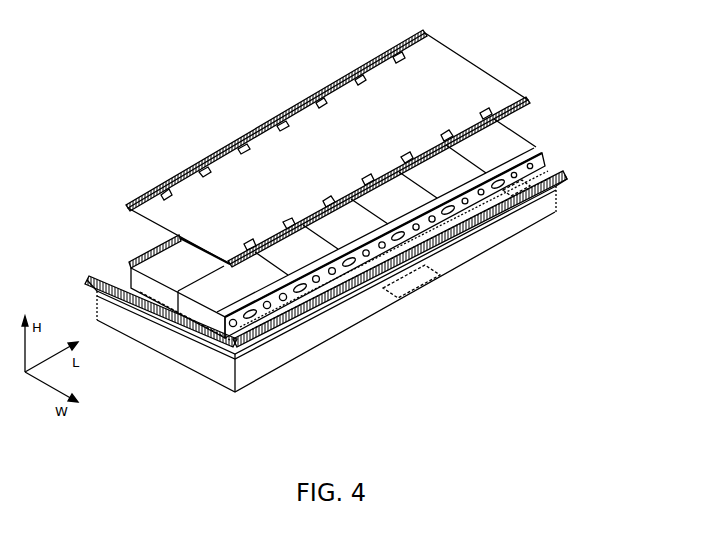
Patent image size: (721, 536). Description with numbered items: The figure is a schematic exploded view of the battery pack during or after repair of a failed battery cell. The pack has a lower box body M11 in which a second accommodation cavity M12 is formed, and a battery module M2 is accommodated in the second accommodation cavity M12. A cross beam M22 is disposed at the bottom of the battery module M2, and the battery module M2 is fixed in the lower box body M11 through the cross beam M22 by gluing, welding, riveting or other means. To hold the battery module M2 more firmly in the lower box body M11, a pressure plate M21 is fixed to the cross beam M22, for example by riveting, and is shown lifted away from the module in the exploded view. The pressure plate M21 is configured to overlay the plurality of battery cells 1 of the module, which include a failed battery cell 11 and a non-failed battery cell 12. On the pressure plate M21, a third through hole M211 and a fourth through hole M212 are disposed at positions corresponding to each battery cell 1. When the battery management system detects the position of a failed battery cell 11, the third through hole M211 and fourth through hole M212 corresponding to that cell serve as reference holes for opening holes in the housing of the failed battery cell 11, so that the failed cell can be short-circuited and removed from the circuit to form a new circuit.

The battery cell 1 is at (397, 335).
The failed battery cell 11 is at (397, 292).
The non-failed battery cell 12 is at (430, 280).
The lower box body M11 is at (364, 287).
The second accommodation cavity M12 is at (182, 327).
The battery module M2 is at (517, 133).
The pressure plate M21 is at (333, 148).
The third through hole M211 is at (353, 80).
The fourth through hole M212 is at (323, 90).
The cross beam M22 is at (240, 368).